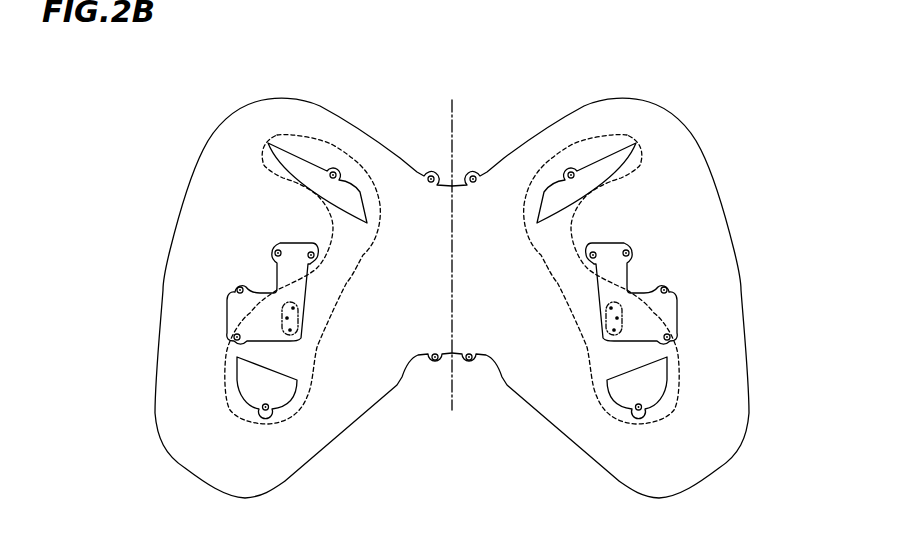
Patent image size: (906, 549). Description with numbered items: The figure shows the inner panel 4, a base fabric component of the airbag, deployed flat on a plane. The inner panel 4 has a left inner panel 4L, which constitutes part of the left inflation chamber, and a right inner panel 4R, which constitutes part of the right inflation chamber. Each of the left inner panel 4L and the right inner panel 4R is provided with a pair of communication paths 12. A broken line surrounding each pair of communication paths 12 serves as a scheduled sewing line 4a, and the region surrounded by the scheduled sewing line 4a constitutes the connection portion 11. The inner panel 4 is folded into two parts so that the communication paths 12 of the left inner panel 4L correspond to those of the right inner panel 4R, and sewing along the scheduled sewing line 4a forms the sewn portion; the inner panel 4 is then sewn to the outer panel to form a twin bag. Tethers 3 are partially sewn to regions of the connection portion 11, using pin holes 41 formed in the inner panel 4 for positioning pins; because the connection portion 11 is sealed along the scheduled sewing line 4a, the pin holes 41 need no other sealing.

The inner panel 4 is at (194, 102).
The right inner panel 4R is at (248, 248).
The left inner panel 4L is at (669, 248).
The scheduled sewing line 4a is at (307, 398).
The connection portion 11 is at (349, 270).
The communication path 12 is at (353, 216).
The tether 3 is at (226, 310).
The pin hole 41 is at (298, 306).